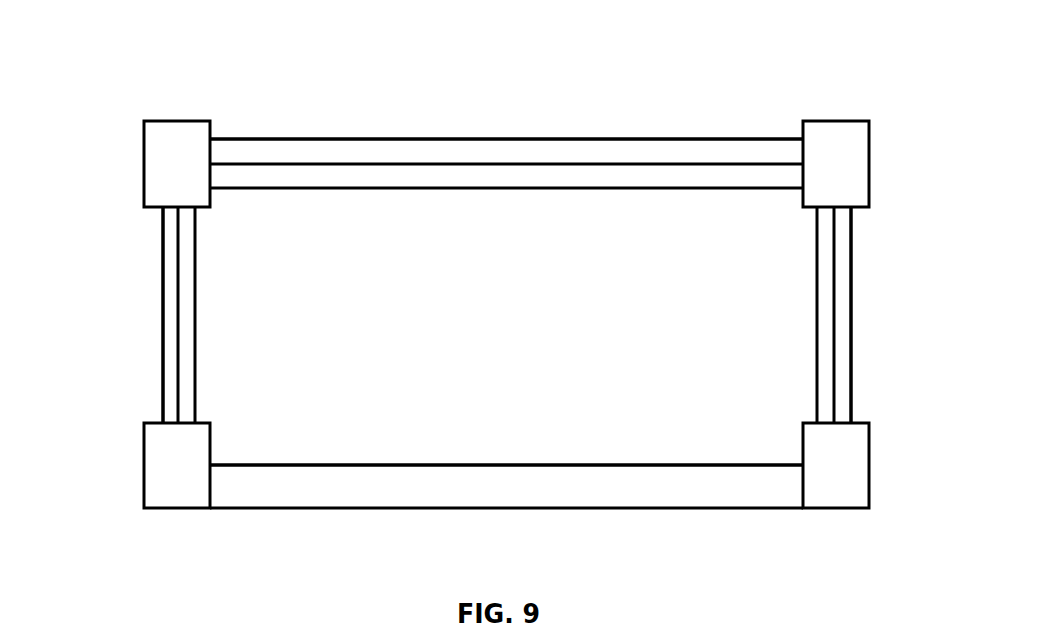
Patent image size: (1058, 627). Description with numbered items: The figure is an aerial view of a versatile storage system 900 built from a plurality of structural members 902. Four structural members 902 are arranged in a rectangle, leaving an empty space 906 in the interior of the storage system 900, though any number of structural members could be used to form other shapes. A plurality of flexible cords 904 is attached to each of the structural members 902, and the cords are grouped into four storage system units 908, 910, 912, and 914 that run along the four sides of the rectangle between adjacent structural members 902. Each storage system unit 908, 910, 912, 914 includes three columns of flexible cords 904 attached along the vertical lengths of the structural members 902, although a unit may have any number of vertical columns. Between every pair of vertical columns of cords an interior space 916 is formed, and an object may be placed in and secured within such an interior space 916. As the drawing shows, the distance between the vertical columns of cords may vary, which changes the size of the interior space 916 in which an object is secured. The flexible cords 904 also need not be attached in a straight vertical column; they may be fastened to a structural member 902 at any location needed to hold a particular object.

The versatile storage system 900 is at (220, 58).
The structural member 902 is at (506, 314).
The flexible cord 904 is at (387, 510).
The empty space 906 is at (364, 271).
The storage system unit 908 is at (599, 104).
The storage system unit 910 is at (871, 343).
The storage system unit 912 is at (692, 551).
The storage system unit 914 is at (115, 367).
The interior space 916 is at (495, 444).